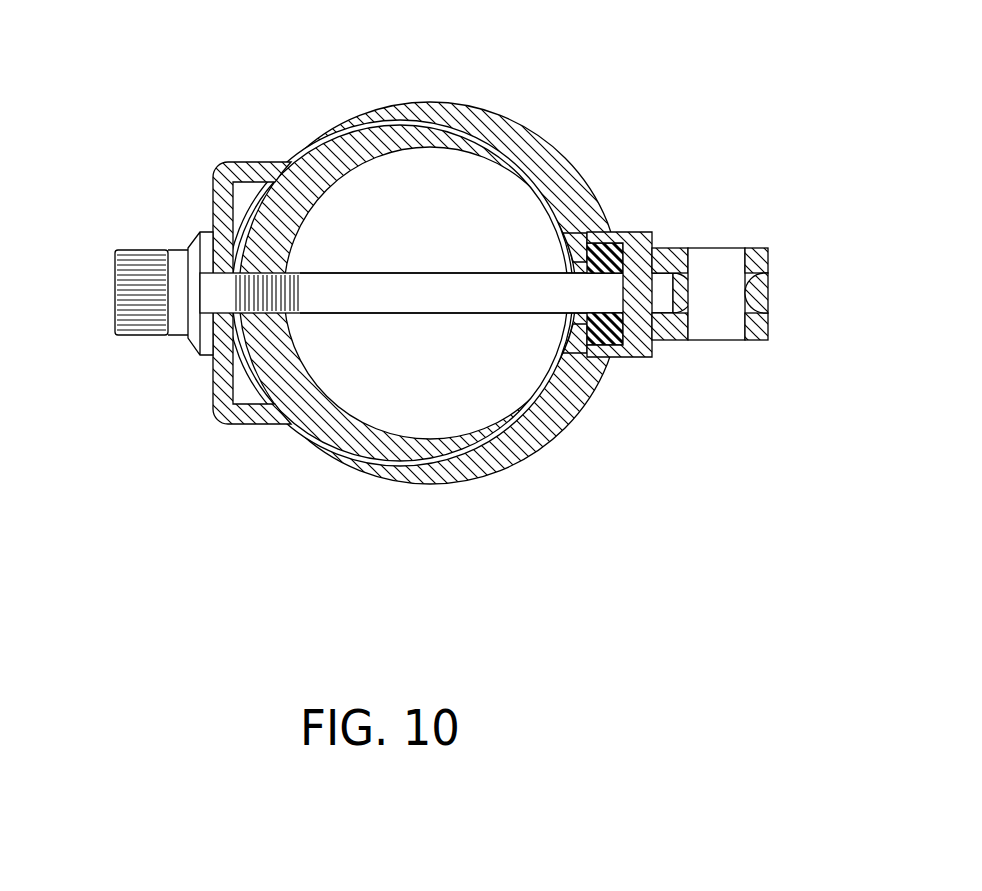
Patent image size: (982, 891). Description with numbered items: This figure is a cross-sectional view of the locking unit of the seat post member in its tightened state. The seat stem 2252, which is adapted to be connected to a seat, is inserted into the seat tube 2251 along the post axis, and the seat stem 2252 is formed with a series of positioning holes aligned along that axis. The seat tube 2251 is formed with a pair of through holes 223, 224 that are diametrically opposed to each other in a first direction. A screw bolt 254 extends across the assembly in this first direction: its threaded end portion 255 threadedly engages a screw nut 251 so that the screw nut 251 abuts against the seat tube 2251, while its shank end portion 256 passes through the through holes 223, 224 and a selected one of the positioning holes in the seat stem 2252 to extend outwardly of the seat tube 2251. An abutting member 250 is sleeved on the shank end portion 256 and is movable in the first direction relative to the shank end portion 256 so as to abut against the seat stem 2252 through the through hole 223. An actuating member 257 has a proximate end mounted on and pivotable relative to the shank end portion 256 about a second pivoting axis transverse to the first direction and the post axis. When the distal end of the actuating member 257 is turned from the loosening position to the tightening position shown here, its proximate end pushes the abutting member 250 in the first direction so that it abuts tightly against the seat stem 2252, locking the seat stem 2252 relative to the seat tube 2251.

The seat tube 2251 is at (548, 450).
The seat stem 2252 is at (375, 128).
The through hole 224 is at (238, 307).
The screw nut 251 is at (137, 249).
The screw bolt 254 is at (358, 318).
The threaded end portion 255 is at (284, 268).
The shank end portion 256 is at (478, 313).
The through hole 223 is at (587, 242).
The abutting member 250 is at (628, 231).
The actuating member 257 is at (778, 260).